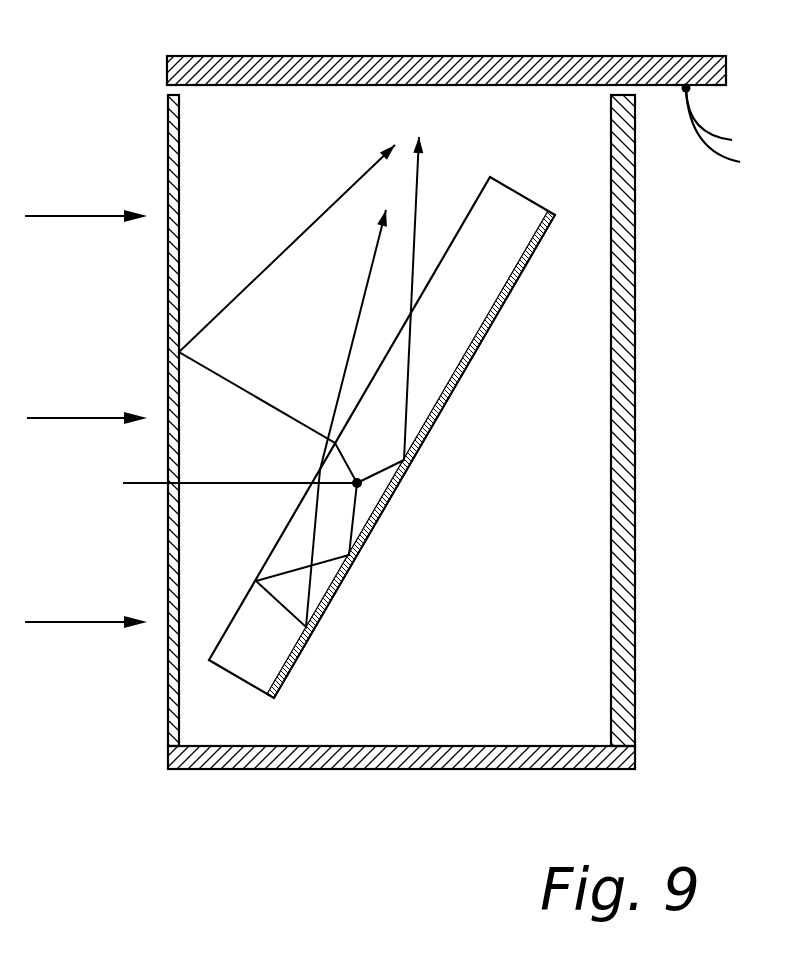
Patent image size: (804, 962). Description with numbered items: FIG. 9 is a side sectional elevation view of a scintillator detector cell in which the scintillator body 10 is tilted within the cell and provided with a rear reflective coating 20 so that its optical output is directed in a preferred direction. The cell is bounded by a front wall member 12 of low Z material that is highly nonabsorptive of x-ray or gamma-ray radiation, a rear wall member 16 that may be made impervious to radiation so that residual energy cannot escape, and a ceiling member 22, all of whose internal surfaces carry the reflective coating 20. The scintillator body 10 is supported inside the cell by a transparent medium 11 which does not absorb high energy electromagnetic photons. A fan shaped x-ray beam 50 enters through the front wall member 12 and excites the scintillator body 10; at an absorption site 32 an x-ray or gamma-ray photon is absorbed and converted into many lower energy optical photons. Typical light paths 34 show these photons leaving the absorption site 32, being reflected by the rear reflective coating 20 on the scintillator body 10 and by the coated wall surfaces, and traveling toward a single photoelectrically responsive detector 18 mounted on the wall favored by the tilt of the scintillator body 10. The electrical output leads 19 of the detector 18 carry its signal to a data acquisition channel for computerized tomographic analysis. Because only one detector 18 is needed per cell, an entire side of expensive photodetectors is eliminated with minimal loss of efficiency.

The scintillator body 10 is at (516, 202).
The transparent medium 11 is at (538, 505).
The front wall member 12 is at (172, 716).
The rear wall member 16 is at (623, 446).
The photoelectrically responsive detector 18 is at (537, 56).
The electrical output lead 19 is at (722, 136).
The reflective coating 20 is at (327, 587).
The upper ceiling member 22 is at (360, 770).
The absorption site 32 is at (360, 487).
The light path 34 is at (286, 246).
The x-ray beam 50 is at (83, 218).